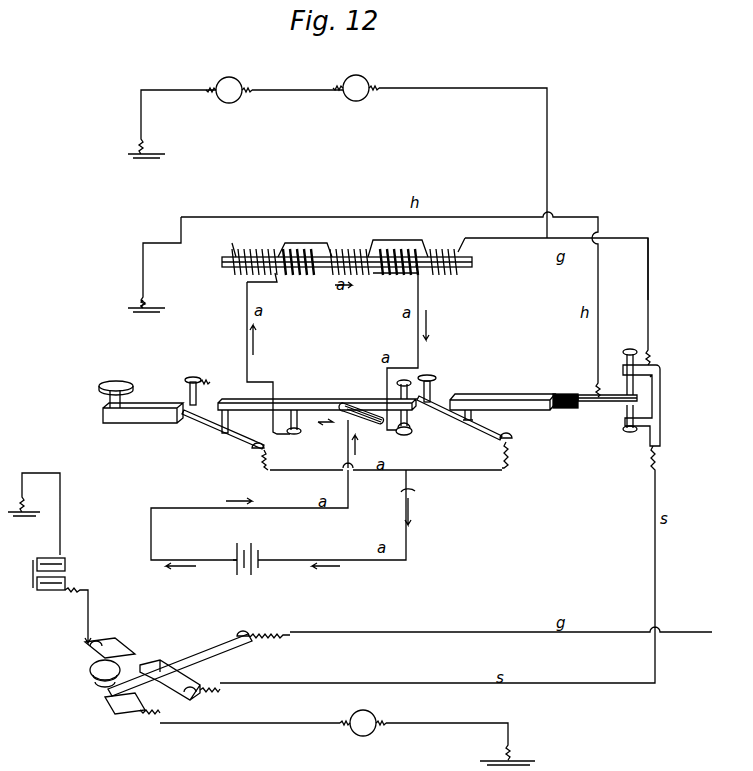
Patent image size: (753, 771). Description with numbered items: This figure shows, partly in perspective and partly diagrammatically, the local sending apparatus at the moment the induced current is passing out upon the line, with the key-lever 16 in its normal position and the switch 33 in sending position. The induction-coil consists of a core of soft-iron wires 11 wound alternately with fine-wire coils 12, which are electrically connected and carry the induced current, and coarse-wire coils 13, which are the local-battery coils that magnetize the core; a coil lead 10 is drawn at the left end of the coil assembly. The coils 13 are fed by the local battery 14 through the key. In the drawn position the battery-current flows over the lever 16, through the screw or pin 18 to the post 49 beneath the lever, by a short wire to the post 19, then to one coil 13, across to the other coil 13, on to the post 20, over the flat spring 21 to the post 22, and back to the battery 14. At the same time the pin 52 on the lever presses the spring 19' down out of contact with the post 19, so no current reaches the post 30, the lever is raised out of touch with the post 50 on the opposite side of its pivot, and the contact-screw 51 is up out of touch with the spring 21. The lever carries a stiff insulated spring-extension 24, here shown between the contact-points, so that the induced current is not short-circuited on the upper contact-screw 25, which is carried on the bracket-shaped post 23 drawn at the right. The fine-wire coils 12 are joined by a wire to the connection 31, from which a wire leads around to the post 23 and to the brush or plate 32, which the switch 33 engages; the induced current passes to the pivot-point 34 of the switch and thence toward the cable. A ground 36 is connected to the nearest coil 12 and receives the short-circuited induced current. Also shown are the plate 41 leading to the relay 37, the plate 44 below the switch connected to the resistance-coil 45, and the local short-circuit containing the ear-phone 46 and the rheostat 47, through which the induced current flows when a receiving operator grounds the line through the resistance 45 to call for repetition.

The coil lead 10 is at (245, 283).
The core of soft-iron wires 11 is at (477, 262).
The fine-wire coils 12 is at (348, 252).
The coarse-wire coils 13 is at (350, 271).
The battery 14 is at (255, 556).
The key-lever 16 is at (338, 410).
The screw or pin 18 is at (336, 398).
The post 19 is at (441, 383).
The spring 19' is at (459, 423).
The post 20 is at (187, 391).
The flat spring 21 is at (223, 429).
The post 22 is at (254, 458).
The relay frame 23 is at (661, 395).
The spring-extension 24 is at (595, 396).
The contact-point 25 is at (627, 383).
The post 30 is at (519, 450).
The connection 31 is at (660, 265).
The brush or plate 32 is at (180, 680).
The switch 33 is at (180, 665).
The pivot-point 34 is at (261, 626).
The ground 36 is at (131, 297).
The relay 37 is at (62, 600).
The brush or plate 41 is at (111, 640).
The plate 44 is at (126, 707).
The resistance-coil 45 is at (363, 715).
The ear-phone 46 is at (356, 78).
The rheostat 47 is at (229, 80).
The post 49 is at (402, 440).
The post 50 is at (301, 433).
The contact-screw 51 is at (329, 429).
The pin 52 is at (478, 416).